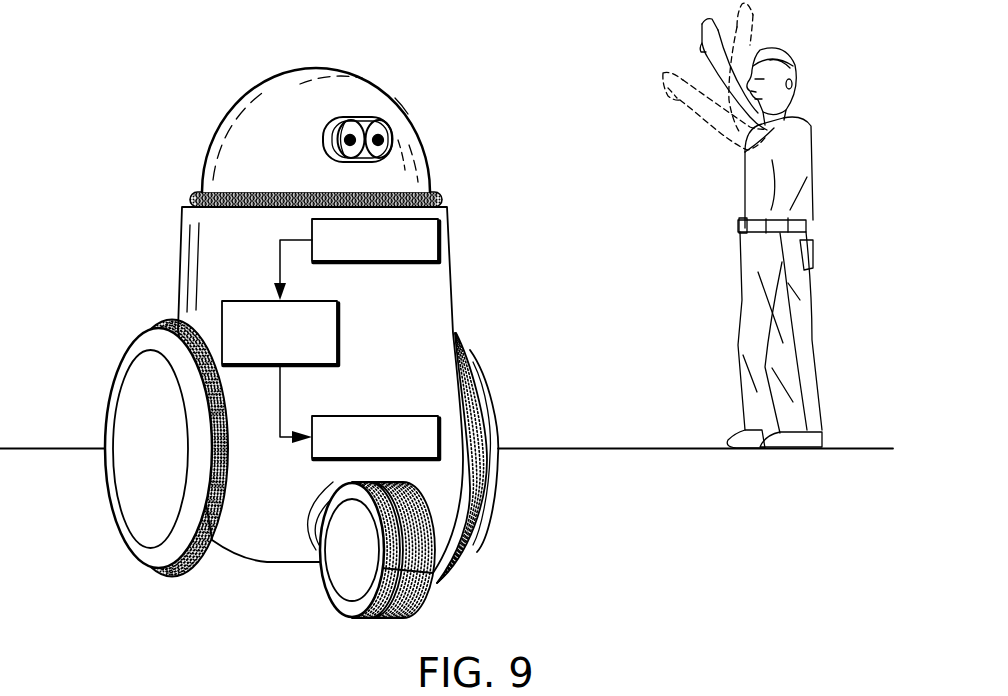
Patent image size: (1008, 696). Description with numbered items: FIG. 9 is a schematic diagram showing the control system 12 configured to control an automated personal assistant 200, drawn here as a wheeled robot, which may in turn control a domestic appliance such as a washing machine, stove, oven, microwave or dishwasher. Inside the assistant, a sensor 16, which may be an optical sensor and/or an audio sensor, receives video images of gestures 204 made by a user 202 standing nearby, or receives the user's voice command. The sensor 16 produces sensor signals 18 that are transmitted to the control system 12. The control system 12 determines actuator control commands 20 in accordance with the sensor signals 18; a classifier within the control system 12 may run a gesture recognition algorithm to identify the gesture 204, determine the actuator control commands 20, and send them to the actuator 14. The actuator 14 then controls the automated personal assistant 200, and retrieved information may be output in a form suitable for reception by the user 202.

The robot 200 is at (301, 332).
The person / user 202 is at (764, 225).
The gesture (arm movement) 204 is at (704, 32).
The control system 12 is at (337, 335).
The actuator 14 is at (391, 416).
The sensor 16 is at (400, 262).
The sensor signals 18 is at (280, 262).
The actuator control commands 20 is at (280, 391).